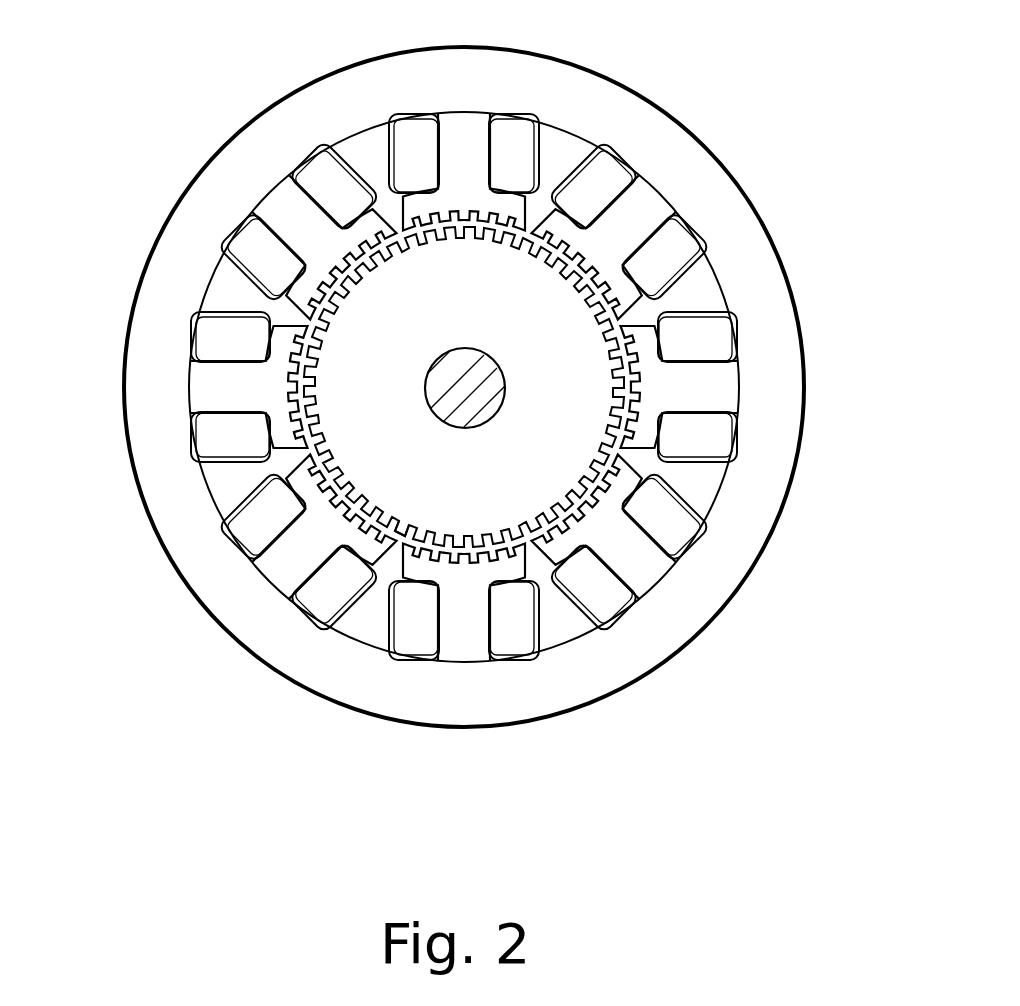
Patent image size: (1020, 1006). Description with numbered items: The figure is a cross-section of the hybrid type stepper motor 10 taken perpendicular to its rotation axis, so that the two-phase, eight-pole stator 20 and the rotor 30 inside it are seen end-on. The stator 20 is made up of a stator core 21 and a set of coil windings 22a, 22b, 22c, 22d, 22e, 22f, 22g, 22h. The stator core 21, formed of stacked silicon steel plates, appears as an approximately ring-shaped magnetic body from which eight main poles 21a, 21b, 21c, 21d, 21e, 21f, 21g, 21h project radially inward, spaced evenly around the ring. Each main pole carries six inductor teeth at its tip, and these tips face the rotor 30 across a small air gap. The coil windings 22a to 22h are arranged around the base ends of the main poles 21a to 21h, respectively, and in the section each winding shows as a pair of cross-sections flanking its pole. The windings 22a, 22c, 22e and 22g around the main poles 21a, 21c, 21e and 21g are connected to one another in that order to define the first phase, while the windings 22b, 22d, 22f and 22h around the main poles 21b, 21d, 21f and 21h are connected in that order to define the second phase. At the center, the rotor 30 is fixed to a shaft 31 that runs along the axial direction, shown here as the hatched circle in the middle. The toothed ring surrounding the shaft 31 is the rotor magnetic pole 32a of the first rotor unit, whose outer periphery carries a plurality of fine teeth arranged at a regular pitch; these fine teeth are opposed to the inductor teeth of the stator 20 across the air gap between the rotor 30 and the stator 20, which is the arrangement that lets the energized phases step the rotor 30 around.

The hybrid type stepper motor 10 is at (627, 83).
The stator 20 is at (168, 208).
The stator core 21 is at (655, 118).
The main pole 21a is at (460, 192).
The main pole 21b is at (608, 240).
The main pole 21c is at (680, 392).
The main pole 21d is at (630, 560).
The main pole 21e is at (460, 625).
The main pole 21f is at (293, 557).
The main pole 21g is at (227, 388).
The main pole 21h is at (300, 223).
The coil winding 22a is at (512, 135).
The coil winding 22b is at (678, 245).
The coil winding 22c is at (713, 445).
The coil winding 22d is at (607, 605).
The coil winding 22e is at (407, 640).
The coil winding 22f is at (250, 530).
The coil winding 22g is at (210, 340).
The coil winding 22h is at (323, 177).
The rotor 30 is at (313, 458).
The shaft 31 is at (447, 418).
The rotor magnetic pole 32a is at (410, 512).